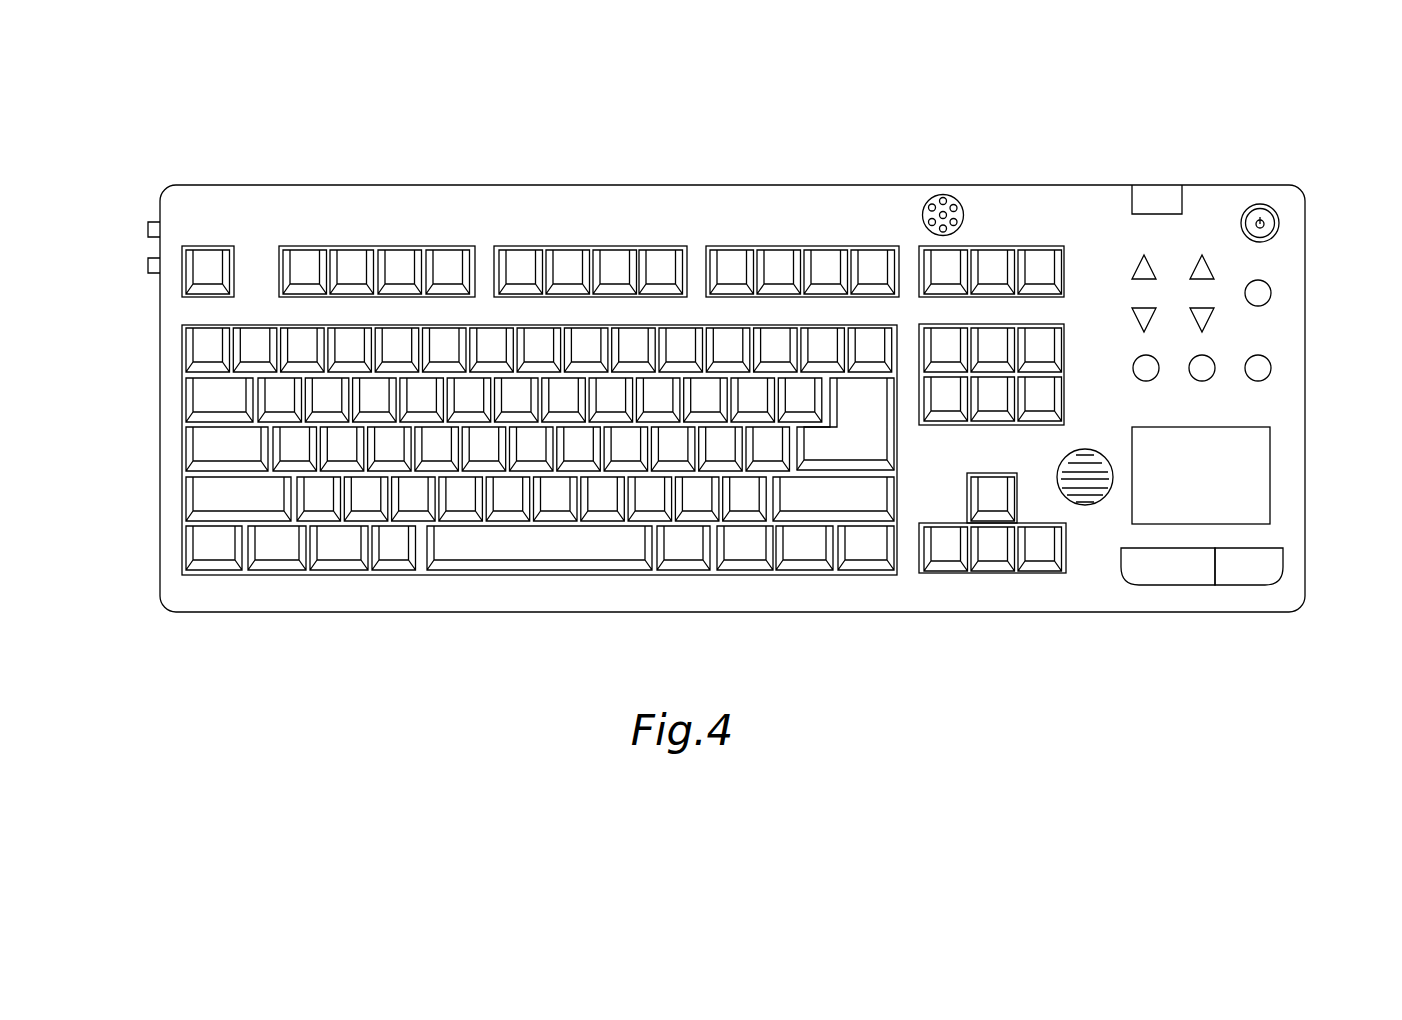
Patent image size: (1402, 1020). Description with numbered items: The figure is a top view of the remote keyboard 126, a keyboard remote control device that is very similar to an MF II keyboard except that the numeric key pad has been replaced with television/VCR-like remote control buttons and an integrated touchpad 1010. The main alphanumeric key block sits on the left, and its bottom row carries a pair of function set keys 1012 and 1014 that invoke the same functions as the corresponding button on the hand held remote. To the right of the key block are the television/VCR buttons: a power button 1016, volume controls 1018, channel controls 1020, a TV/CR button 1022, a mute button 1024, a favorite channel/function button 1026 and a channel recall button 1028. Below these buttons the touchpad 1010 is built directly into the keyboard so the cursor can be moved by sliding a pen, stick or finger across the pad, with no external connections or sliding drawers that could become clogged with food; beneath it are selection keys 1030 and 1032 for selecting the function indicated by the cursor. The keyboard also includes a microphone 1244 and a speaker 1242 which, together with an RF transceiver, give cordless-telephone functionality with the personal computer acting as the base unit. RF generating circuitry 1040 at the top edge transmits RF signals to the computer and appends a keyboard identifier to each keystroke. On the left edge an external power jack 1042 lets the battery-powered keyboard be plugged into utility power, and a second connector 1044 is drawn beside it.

The remote keyboard 126 is at (670, 122).
The touchpad 1010 is at (1253, 482).
The function set key 1012 is at (278, 548).
The function set key 1014 is at (748, 548).
The power button 1016 is at (1282, 223).
The volume controls 1018 is at (1135, 270).
The channel controls 1020 is at (1193, 270).
The TV/CR button 1022 is at (1270, 292).
The mute button 1024 is at (1146, 372).
The favorite channel/function button 1026 is at (1203, 370).
The channel recall button 1028 is at (1270, 366).
The selection key 1030 is at (1173, 575).
The selection key 1032 is at (1247, 575).
The RF generating circuitry 1040 is at (1155, 196).
The external power jack 1042 is at (148, 229).
The connector port 1044 is at (148, 265).
The speaker 1242 is at (1090, 505).
The microphone 1244 is at (962, 206).